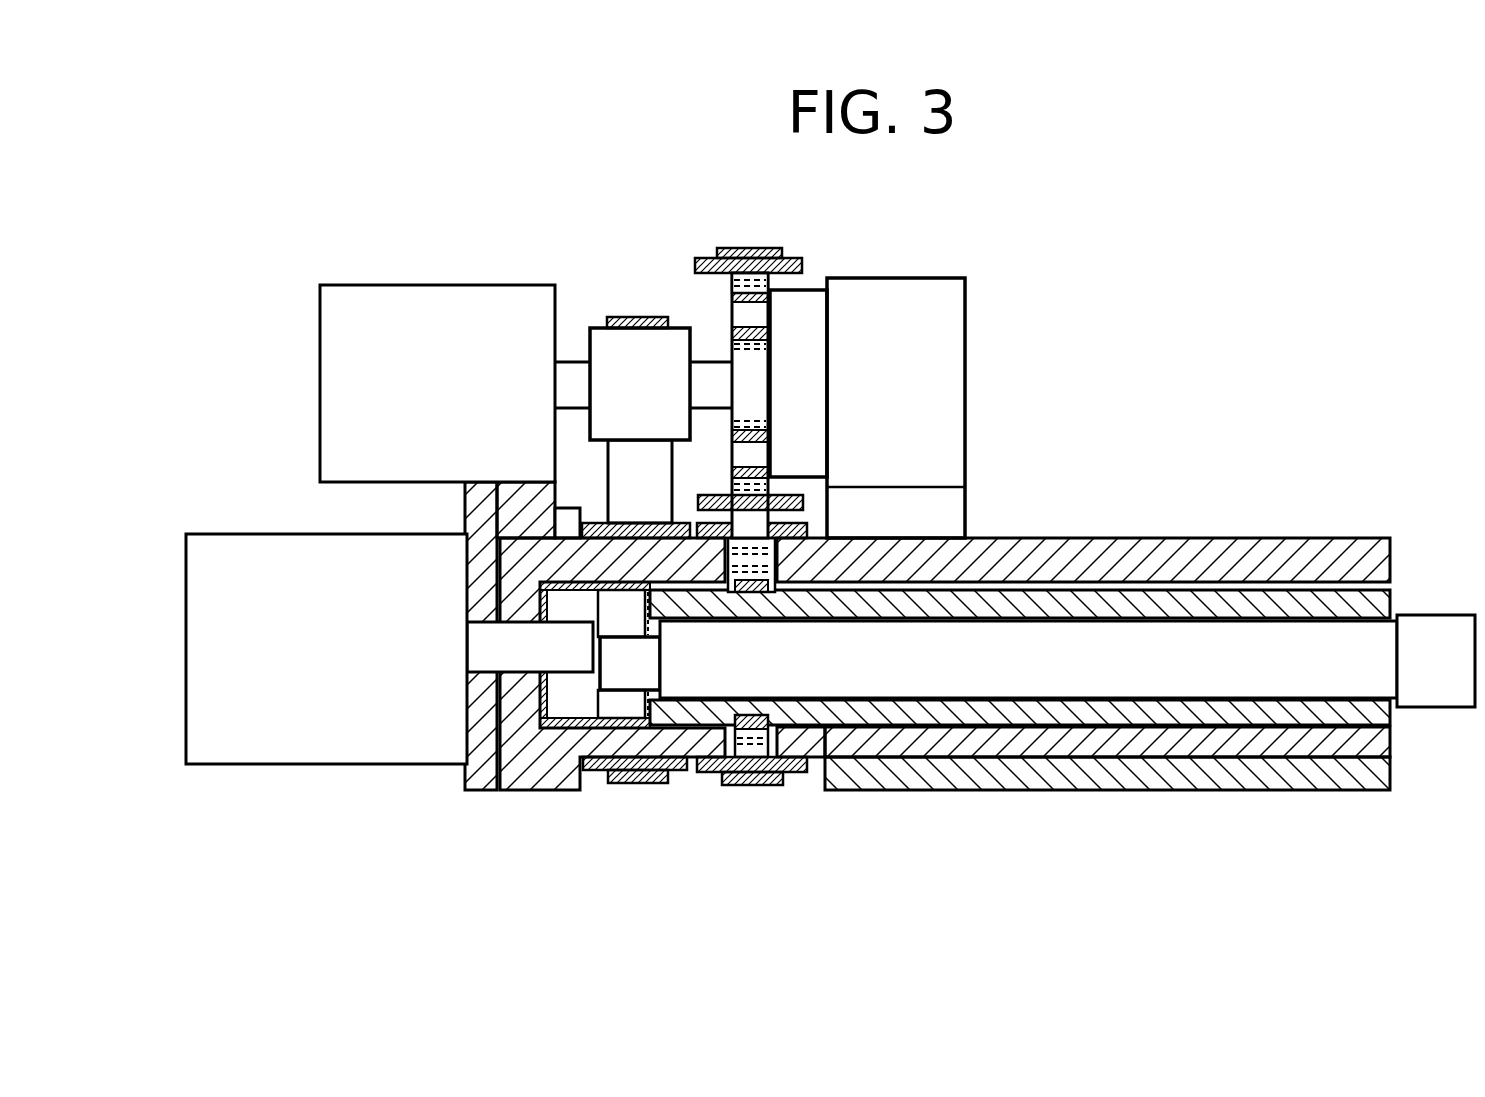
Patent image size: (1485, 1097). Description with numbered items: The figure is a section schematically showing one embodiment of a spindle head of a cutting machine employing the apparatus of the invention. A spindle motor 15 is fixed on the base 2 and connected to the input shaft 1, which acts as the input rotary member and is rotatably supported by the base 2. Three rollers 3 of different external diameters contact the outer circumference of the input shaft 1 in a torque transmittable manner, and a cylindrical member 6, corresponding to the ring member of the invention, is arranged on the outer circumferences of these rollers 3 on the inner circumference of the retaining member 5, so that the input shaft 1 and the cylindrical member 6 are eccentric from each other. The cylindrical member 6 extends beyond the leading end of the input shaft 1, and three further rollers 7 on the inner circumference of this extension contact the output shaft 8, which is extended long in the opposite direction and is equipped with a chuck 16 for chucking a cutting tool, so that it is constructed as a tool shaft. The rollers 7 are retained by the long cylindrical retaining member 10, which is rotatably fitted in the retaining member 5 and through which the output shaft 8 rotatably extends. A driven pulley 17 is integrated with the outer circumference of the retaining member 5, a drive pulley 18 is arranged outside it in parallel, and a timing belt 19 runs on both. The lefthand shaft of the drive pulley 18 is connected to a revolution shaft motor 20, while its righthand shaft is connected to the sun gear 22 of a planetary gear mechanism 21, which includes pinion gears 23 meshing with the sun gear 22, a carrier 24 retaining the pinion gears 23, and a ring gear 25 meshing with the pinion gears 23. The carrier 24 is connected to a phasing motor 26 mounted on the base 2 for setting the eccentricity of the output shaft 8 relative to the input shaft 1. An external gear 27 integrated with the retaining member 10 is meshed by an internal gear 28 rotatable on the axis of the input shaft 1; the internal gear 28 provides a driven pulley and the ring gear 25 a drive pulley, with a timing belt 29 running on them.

The input shaft 1 is at (490, 653).
The base 2 is at (480, 506).
The rollers 3 is at (530, 738).
The retaining member 5 is at (557, 745).
The cylindrical member 6 is at (603, 762).
The rollers 7 is at (676, 768).
The output shaft 8 is at (1073, 640).
The retaining member 10 is at (968, 603).
The spindle motor 15 is at (280, 740).
The chuck 16 is at (1433, 630).
The driven pulley 17 is at (628, 702).
The drive pulley 18 is at (603, 352).
The timing belt 19 is at (645, 315).
The revolution shaft motor 20 is at (412, 305).
The planetary gear mechanism 21 is at (818, 267).
The sun gear 22 is at (753, 378).
The pinion gears 23 is at (753, 312).
The carrier 24 is at (803, 427).
The ring gear 25 is at (807, 502).
The phasing motor 26 is at (943, 282).
The external gear 27 is at (805, 730).
The internal gear 28 is at (750, 775).
The timing belt 29 is at (762, 250).